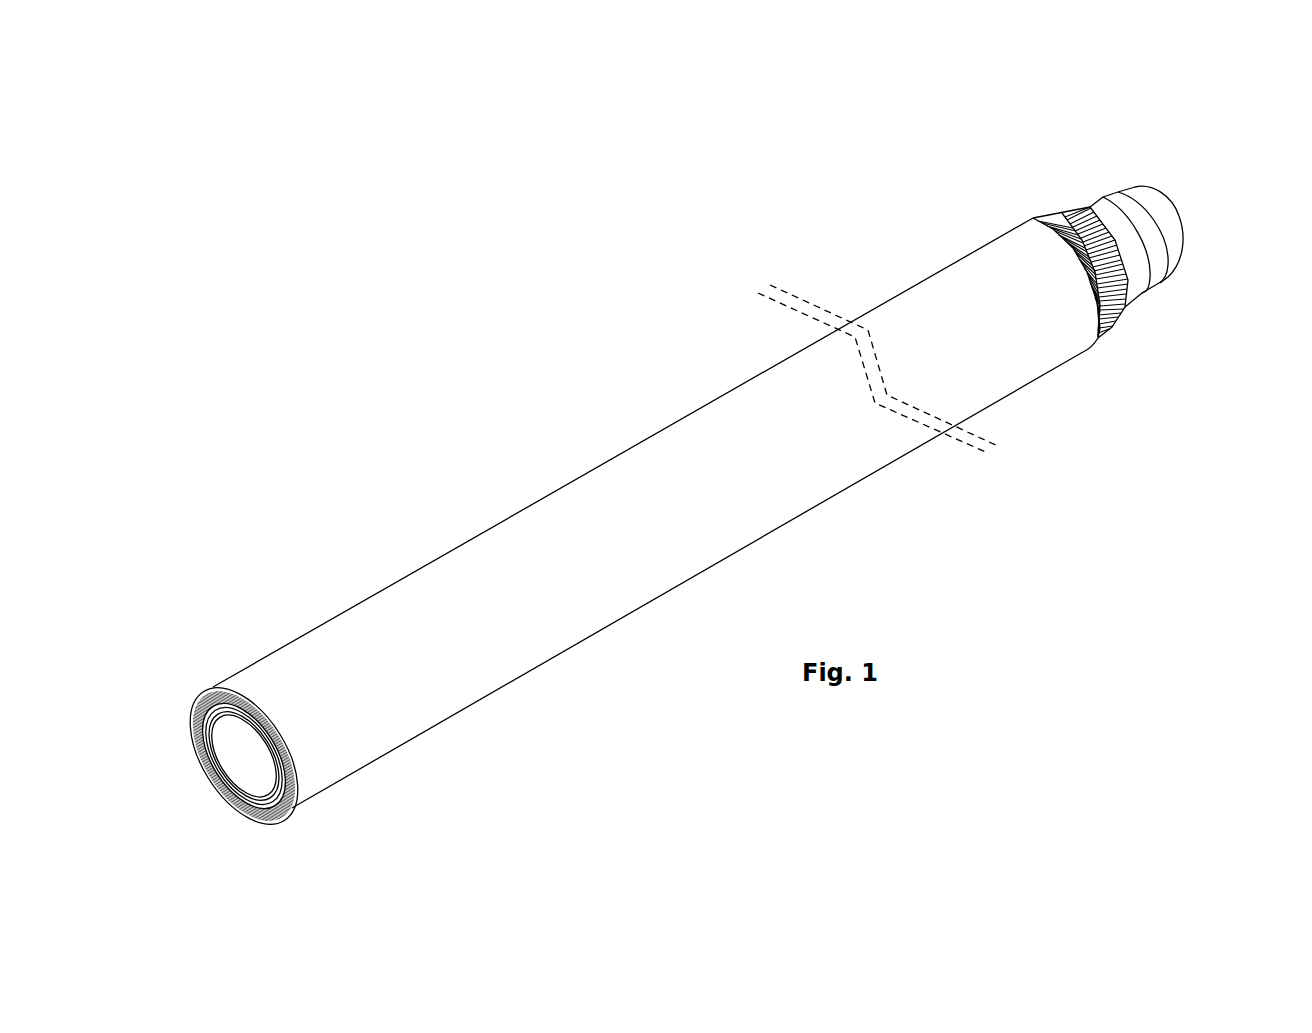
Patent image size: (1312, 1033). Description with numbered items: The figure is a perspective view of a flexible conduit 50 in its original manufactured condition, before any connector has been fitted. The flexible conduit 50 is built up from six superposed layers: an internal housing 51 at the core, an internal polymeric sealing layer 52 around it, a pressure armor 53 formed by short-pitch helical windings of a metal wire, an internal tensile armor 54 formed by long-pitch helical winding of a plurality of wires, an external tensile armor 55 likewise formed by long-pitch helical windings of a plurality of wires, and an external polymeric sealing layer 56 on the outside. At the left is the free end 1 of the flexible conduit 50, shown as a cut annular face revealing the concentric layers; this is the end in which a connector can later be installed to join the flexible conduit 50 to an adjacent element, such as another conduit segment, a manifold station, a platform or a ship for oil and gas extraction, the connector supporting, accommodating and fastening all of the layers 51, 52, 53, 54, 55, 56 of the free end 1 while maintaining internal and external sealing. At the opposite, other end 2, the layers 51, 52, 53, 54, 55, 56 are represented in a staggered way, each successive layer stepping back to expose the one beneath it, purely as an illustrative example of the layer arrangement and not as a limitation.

The free end 1 is at (199, 646).
The other end 2 is at (1064, 173).
The flexible conduit 50 is at (584, 359).
The internal housing 51 is at (1185, 252).
The internal polymeric sealing layer 52 is at (1160, 280).
The pressure armor 53 is at (1143, 292).
The internal tensile armor 54 is at (1123, 315).
The external tensile armor 55 is at (1110, 332).
The external polymeric sealing layer 56 is at (1083, 345).